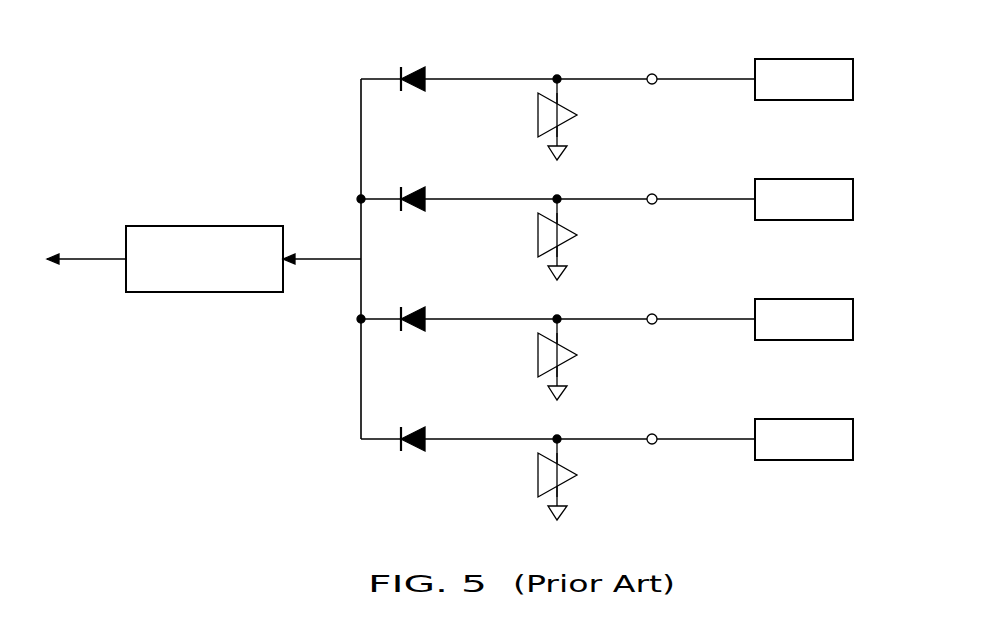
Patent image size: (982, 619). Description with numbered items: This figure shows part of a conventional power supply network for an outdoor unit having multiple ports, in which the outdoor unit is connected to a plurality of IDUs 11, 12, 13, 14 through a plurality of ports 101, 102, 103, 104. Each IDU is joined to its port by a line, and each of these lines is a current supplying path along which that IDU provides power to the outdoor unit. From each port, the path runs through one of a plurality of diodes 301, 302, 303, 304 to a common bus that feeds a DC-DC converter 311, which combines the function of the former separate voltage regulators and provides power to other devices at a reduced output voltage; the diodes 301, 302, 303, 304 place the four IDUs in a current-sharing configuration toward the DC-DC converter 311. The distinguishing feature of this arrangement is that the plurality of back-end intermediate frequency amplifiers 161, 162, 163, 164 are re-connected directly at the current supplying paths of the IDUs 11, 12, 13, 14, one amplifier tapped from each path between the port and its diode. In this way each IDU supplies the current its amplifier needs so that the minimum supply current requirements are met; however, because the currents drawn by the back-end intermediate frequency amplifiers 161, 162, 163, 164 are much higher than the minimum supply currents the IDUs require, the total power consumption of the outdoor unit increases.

The DC-DC converter 311 is at (203, 226).
The diode 301 is at (413, 66).
The diode 302 is at (413, 186).
The diode 303 is at (413, 306).
The diode 304 is at (413, 426).
The back-end intermediate frequency amplifier 161 is at (537, 115).
The back-end intermediate frequency amplifier 162 is at (537, 235).
The back-end intermediate frequency amplifier 163 is at (537, 355).
The back-end intermediate frequency amplifier 164 is at (537, 475).
The port 101 is at (652, 73).
The port 102 is at (652, 193).
The port 103 is at (652, 313).
The port 104 is at (652, 433).
The IDU 11 is at (853, 79).
The IDU 12 is at (853, 199).
The IDU 13 is at (853, 319).
The IDU 14 is at (853, 439).